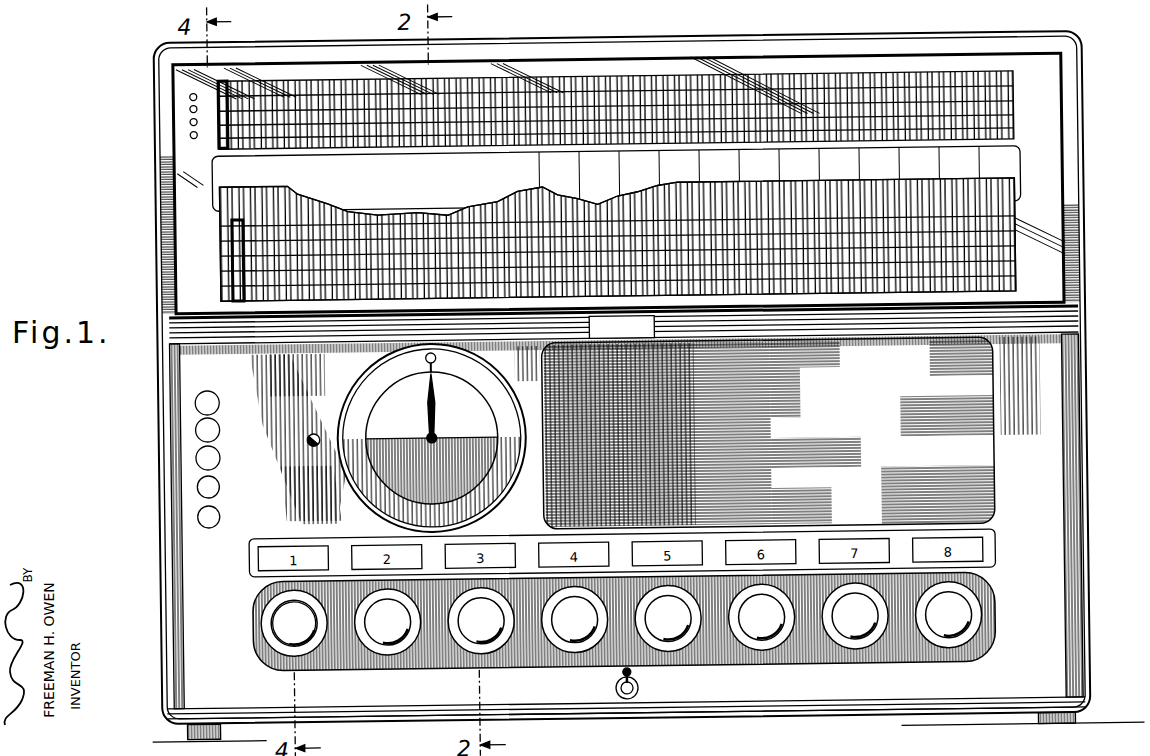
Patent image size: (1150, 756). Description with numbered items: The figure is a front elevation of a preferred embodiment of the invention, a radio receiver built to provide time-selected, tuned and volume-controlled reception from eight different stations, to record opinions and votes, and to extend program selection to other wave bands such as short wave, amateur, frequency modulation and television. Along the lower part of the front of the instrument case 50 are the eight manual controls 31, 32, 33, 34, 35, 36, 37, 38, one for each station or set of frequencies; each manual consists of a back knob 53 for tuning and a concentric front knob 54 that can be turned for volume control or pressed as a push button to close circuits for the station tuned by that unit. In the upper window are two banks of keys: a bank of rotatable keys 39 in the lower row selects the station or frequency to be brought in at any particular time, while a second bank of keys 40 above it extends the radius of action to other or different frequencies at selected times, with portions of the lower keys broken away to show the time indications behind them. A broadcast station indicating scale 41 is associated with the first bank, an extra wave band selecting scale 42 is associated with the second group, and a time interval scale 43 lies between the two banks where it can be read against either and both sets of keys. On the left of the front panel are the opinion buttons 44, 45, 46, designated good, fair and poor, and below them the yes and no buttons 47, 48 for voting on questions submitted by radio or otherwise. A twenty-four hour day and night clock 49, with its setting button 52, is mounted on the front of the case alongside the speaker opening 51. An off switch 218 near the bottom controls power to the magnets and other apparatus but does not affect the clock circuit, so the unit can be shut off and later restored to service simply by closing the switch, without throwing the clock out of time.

The manual control 31 is at (286, 645).
The manual control 32 is at (382, 644).
The manual control 33 is at (470, 642).
The manual control 34 is at (566, 641).
The manual control 35 is at (673, 640).
The manual control 36 is at (765, 639).
The manual control 37 is at (858, 637).
The manual control 38 is at (949, 636).
The bank of rotatable keys 39 is at (669, 254).
The second bank of keys 40 is at (668, 133).
The broadcast station indicating scale 41 is at (158, 260).
The extra wave band selecting scale 42 is at (156, 116).
The time interval scale 43 is at (665, 199).
The opinion button 44 is at (184, 409).
The opinion button 45 is at (179, 439).
The opinion button 46 is at (184, 468).
The yes button 47 is at (166, 499).
The no button 48 is at (167, 529).
The twenty-four hour day and night clock 49 is at (416, 438).
The instrument case 50 is at (644, 386).
The speaker opening 51 is at (832, 432).
The setting button 52 is at (299, 464).
The back knob 53 is at (610, 621).
The concentric front knob 54 is at (266, 624).
The off switch 218 is at (609, 711).